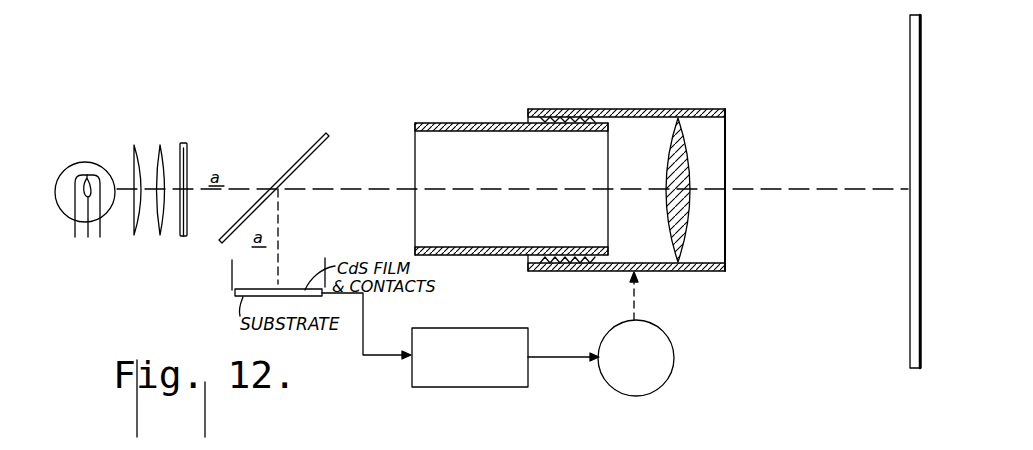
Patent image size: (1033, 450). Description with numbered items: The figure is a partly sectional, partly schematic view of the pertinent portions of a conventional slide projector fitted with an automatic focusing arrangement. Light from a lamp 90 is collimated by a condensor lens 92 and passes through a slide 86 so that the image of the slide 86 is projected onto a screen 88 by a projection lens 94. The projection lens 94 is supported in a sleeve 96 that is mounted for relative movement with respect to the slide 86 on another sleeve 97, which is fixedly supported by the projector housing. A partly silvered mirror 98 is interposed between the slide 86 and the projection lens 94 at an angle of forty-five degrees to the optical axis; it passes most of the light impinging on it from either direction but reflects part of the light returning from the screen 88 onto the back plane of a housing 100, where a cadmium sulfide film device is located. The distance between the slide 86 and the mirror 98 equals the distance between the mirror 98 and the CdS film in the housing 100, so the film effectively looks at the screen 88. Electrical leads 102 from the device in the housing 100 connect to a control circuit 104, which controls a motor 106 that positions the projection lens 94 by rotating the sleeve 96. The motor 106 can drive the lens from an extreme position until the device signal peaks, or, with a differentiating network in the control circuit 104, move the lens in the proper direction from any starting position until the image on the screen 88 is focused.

The slide 86 is at (187, 150).
The screen 88 is at (910, 55).
The lamp 90 is at (86, 167).
The condensor lens 92 is at (134, 147).
The projection lens 94 is at (690, 142).
The sleeve 96 is at (608, 109).
The sleeve 97 is at (485, 123).
The partly silvered mirror 98 is at (325, 138).
The housing 100 is at (227, 276).
The electrical leads 102 is at (365, 320).
The control circuit 104 is at (467, 328).
The motor 106 is at (607, 335).